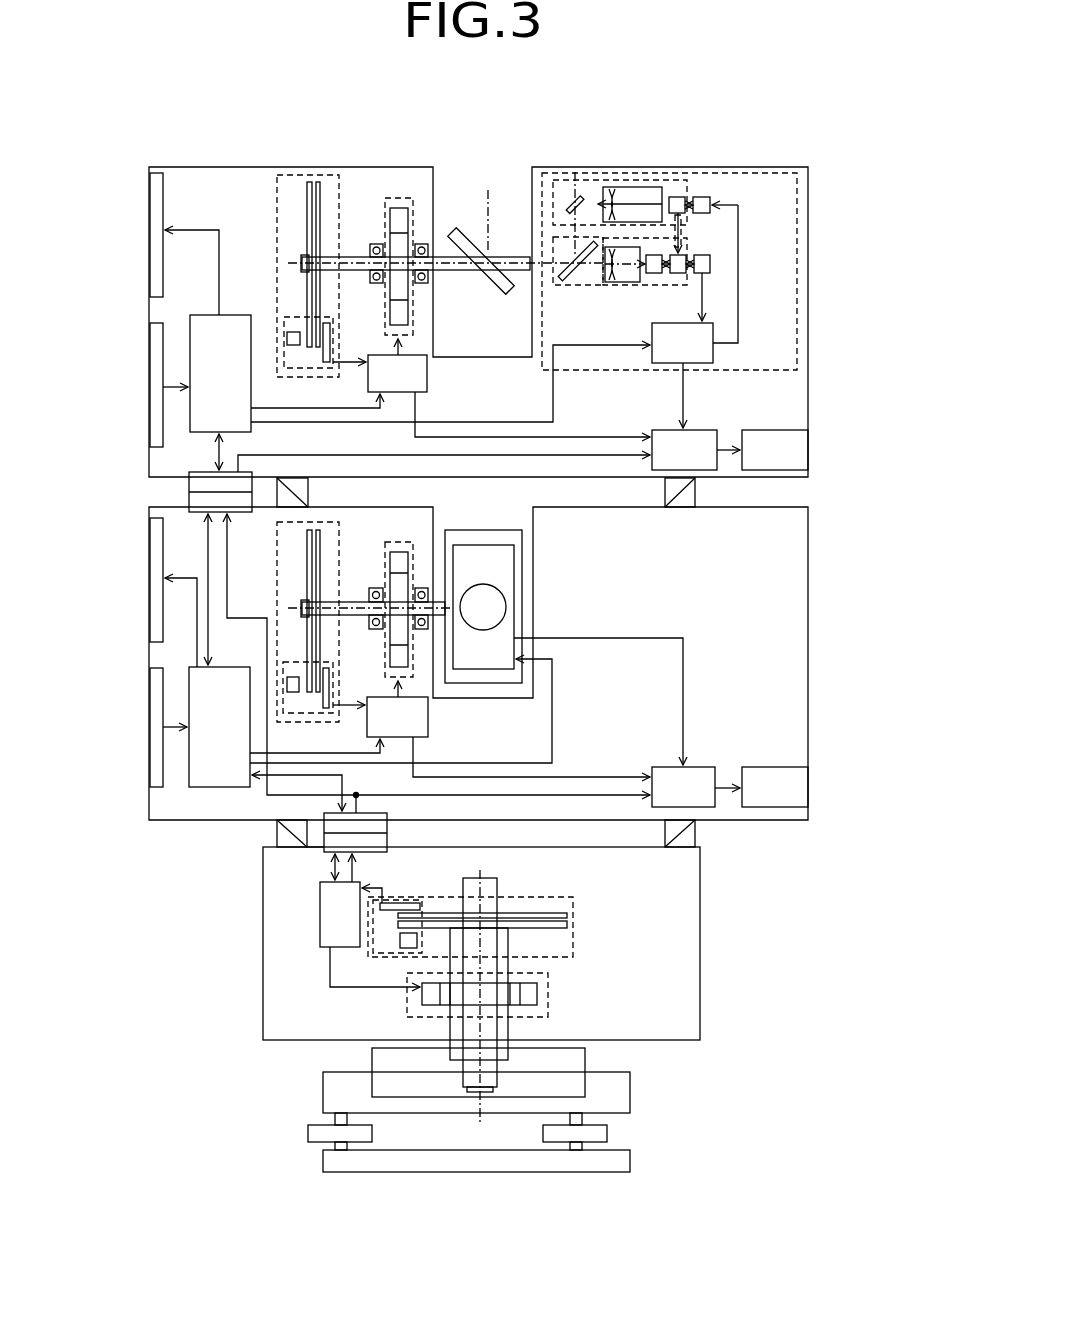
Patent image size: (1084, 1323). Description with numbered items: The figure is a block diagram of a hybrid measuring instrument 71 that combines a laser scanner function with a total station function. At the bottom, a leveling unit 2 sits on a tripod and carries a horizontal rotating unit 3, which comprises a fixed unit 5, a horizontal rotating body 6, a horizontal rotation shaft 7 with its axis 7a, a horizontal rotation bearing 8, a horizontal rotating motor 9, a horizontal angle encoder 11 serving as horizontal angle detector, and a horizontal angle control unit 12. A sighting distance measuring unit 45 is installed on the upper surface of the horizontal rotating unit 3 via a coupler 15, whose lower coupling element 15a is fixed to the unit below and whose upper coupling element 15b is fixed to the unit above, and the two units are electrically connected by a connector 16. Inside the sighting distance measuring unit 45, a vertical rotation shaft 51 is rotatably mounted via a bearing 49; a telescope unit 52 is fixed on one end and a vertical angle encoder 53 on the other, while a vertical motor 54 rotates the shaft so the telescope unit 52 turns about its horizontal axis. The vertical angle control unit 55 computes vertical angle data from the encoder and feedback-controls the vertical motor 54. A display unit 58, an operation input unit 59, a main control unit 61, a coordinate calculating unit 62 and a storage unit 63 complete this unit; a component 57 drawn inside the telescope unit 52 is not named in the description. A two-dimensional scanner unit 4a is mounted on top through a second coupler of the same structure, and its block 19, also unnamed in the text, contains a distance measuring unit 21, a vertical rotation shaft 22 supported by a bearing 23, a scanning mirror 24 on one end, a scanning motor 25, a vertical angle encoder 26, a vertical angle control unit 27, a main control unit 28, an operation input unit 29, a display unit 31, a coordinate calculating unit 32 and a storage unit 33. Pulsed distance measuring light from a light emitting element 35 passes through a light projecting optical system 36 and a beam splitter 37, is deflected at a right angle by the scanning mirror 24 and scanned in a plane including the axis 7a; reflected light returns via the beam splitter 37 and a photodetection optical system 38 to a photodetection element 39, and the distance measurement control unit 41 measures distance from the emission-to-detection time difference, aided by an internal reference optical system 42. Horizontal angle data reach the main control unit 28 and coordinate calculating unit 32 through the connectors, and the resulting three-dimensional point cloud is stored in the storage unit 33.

The hybrid measuring instrument 71 is at (514, 103).
The first measuring unit 19 is at (262, 167).
The bearing 23 is at (375, 243).
The scanning motor 25 is at (400, 197).
The scanning mirror 24 is at (458, 230).
The two-dimensional scanner unit 4a is at (671, 220).
The light projecting optical system 36 is at (622, 180).
The distance measuring unit 21 is at (703, 167).
The display unit 31 is at (148, 222).
The vertical angle encoder 26 is at (277, 228).
The light emitting element 35 is at (703, 193).
The main control unit 28 is at (203, 315).
The internal reference optical system 42 is at (687, 231).
The operation input unit 29 is at (148, 387).
The vertical rotation shaft 22 is at (358, 272).
The photodetection element 39 is at (710, 266).
The vertical angle control unit 27 is at (427, 380).
The beam splitter 37 is at (587, 290).
The photodetection optical system 38 is at (642, 287).
The distance measurement control unit 41 is at (713, 335).
The coordinate calculating unit 32 is at (668, 430).
The storage unit 33 is at (787, 430).
The connector 16 is at (189, 473).
The coupler 15 is at (698, 493).
The lower coupling element 15a is at (695, 835).
The upper coupling element 15b is at (665, 828).
The vertical motor 54 is at (388, 540).
The telescope unit 52 is at (477, 528).
The vertical angle encoder 53 is at (277, 592).
The bearing 49 is at (376, 587).
The display unit 58 is at (148, 583).
The imaging lens 57 is at (506, 597).
The sighting distance measuring unit 45 is at (810, 651).
The main control unit 61 is at (188, 672).
The operation input unit 59 is at (148, 740).
The vertical rotation shaft 51 is at (357, 617).
The vertical angle control unit 55 is at (428, 718).
The coordinate calculating unit 62 is at (660, 767).
The storage unit 63 is at (765, 765).
The horizontal rotation shaft 7 is at (498, 885).
The horizontal angle encoder 11 is at (573, 918).
The horizontal angle control unit 12 is at (320, 932).
The axis 7a is at (483, 947).
The horizontal rotating unit 3 is at (501, 985).
The horizontal rotating body 6 is at (262, 993).
The horizontal rotating motor 9 is at (548, 995).
The horizontal rotation bearing 8 is at (450, 1033).
The fixed unit 5 is at (587, 1053).
The leveling unit 2 is at (632, 1087).